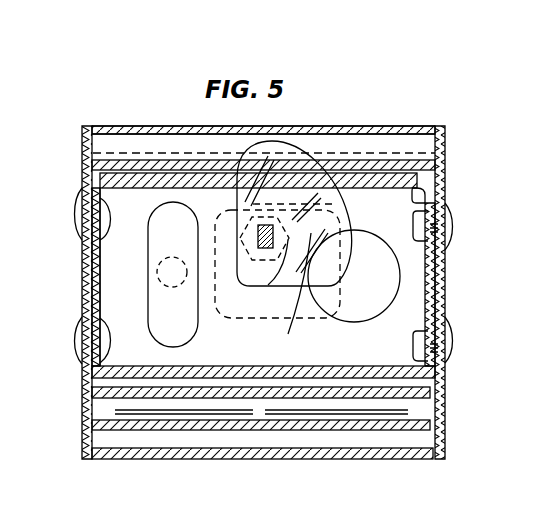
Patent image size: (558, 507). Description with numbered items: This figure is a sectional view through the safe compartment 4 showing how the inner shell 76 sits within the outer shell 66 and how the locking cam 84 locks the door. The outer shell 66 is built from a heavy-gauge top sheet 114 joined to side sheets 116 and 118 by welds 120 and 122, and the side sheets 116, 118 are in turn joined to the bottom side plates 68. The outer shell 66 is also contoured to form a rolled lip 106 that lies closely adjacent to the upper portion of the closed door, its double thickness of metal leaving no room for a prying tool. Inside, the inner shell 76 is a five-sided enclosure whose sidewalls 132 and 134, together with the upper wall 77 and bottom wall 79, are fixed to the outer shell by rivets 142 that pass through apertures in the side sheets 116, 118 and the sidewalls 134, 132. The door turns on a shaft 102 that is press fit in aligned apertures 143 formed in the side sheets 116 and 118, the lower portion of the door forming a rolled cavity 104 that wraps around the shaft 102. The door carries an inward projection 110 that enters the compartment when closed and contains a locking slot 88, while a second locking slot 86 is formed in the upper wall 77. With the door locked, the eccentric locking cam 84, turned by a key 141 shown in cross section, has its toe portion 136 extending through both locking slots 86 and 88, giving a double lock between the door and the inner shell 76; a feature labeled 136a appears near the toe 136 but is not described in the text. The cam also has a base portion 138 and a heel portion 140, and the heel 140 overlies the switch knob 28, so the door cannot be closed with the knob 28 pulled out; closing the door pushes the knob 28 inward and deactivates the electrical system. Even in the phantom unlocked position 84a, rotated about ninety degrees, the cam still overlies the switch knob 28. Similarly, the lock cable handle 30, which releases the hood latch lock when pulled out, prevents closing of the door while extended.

The safe compartment 4 is at (184, 121).
The switch knob 28 is at (446, 253).
The lock cable handle 30 is at (150, 305).
The outer shell 66 is at (70, 170).
The bottom side plates 68 is at (414, 470).
The inner shell 76 is at (232, 338).
The upper wall 77 is at (426, 203).
The bottom wall 79 is at (251, 360).
The locking cam 84 is at (299, 165).
The locking cam unlocked position 84a is at (347, 205).
The locking slot 86 is at (238, 183).
The locking slot 88 is at (294, 221).
The shaft 102 is at (84, 405).
The rolled cavity 104 is at (408, 413).
The rolled lip 106 is at (392, 122).
The inward projection 110 is at (134, 162).
The top sheet 114 is at (196, 126).
The side sheet 116 is at (444, 268).
The side sheet 118 is at (84, 266).
The weld 120 is at (445, 132).
The weld 122 is at (85, 125).
The sidewall 132 is at (119, 249).
The sidewall 134 is at (420, 320).
The toe portion 136 is at (263, 140).
The cam roller 136a is at (352, 288).
The base portion 138 is at (303, 296).
The heel portion 140 is at (350, 222).
The key 141 is at (283, 279).
The rivets 142 is at (78, 334).
The aligned apertures 143 is at (438, 404).